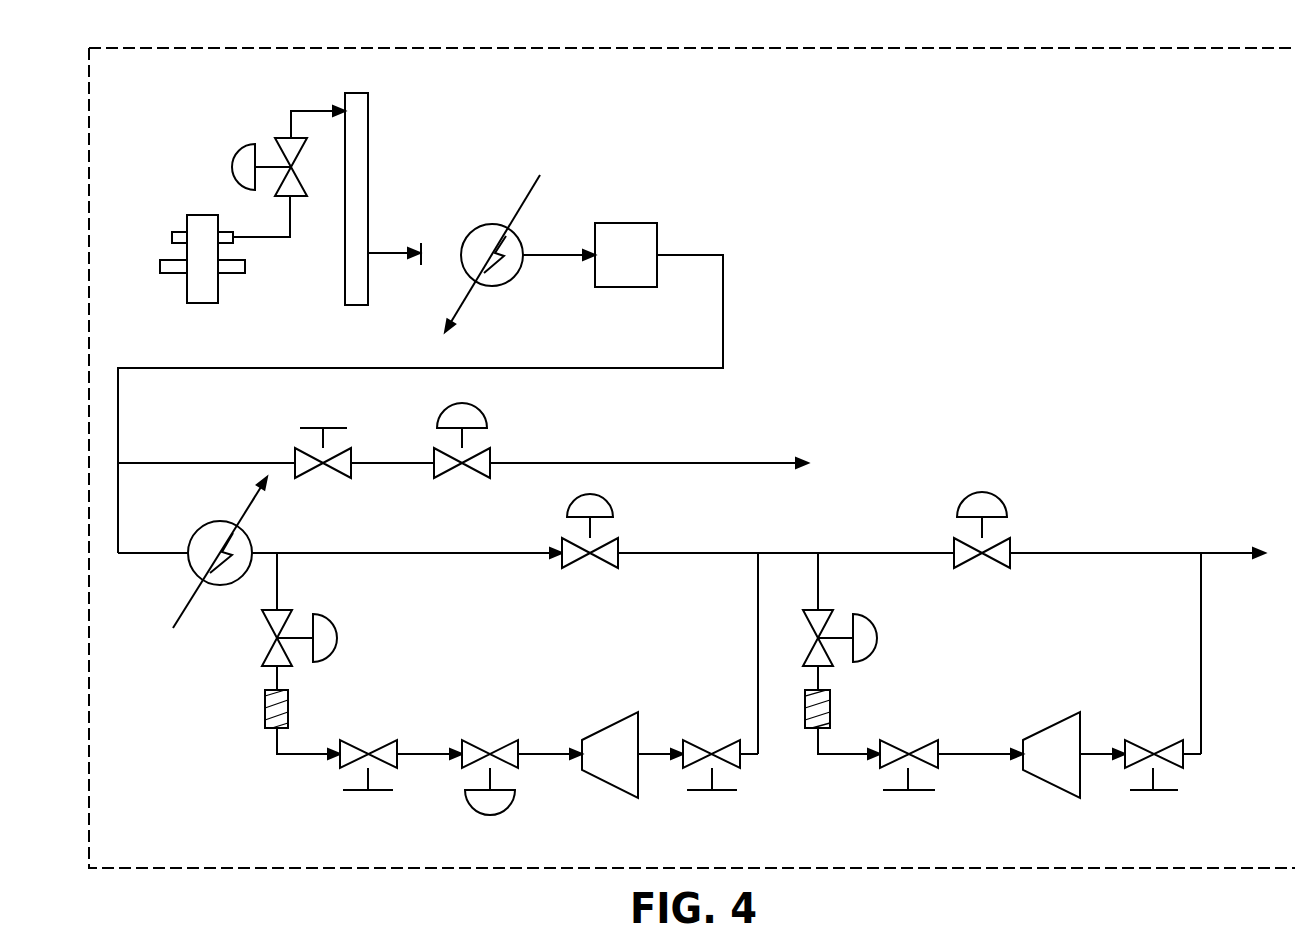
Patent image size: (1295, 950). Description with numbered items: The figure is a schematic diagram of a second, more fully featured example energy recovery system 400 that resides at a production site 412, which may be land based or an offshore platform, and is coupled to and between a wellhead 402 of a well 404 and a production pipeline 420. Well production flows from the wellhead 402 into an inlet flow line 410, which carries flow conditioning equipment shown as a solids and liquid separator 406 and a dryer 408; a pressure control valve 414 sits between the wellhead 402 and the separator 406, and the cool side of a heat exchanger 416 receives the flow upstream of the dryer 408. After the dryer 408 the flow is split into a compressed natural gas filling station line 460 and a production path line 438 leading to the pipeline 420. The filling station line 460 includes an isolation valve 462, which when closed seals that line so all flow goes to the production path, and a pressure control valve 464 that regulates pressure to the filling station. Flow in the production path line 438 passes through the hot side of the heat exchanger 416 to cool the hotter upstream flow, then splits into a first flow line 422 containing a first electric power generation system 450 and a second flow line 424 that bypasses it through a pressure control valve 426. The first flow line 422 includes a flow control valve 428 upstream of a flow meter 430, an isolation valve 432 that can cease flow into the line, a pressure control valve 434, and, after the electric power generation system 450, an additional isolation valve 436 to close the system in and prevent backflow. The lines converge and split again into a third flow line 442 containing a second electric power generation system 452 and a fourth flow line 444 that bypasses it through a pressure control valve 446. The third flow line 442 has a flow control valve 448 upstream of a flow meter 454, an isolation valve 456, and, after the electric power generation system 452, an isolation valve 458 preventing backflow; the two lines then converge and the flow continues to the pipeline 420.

The energy recovery system 400 is at (952, 198).
The wellhead 402 is at (198, 215).
The well 404 is at (183, 316).
The solids and liquid separator 406 is at (368, 112).
The dryer 408 is at (638, 223).
The inlet flow line 410 is at (272, 238).
The production site 412 is at (955, 48).
The pressure control valve 414 is at (287, 137).
The heat exchanger 416 is at (478, 222).
The production pipeline 420 is at (1233, 557).
The first flow line 422 is at (280, 600).
The second flow line 424 is at (470, 555).
The pressure control valve 426 is at (603, 568).
The flow control valve 428 is at (338, 642).
The flow meter 430 is at (263, 707).
The isolation valve 432 is at (355, 740).
The pressure control valve 434 is at (475, 740).
The isolation valve 436 is at (697, 745).
The production path line 438 is at (118, 522).
The third flow line 442 is at (818, 593).
The fourth flow line 444 is at (858, 553).
The pressure control valve 446 is at (995, 562).
The flow control valve 448 is at (880, 642).
The electric power generation system 450 is at (644, 806).
The electric power generation system 452 is at (1082, 805).
The flow meter 454 is at (832, 703).
The isolation valve 456 is at (933, 740).
The isolation valve 458 is at (1172, 743).
The CNG filling station line 460 is at (195, 463).
The isolation valve 462 is at (330, 470).
The pressure control valve 464 is at (468, 472).